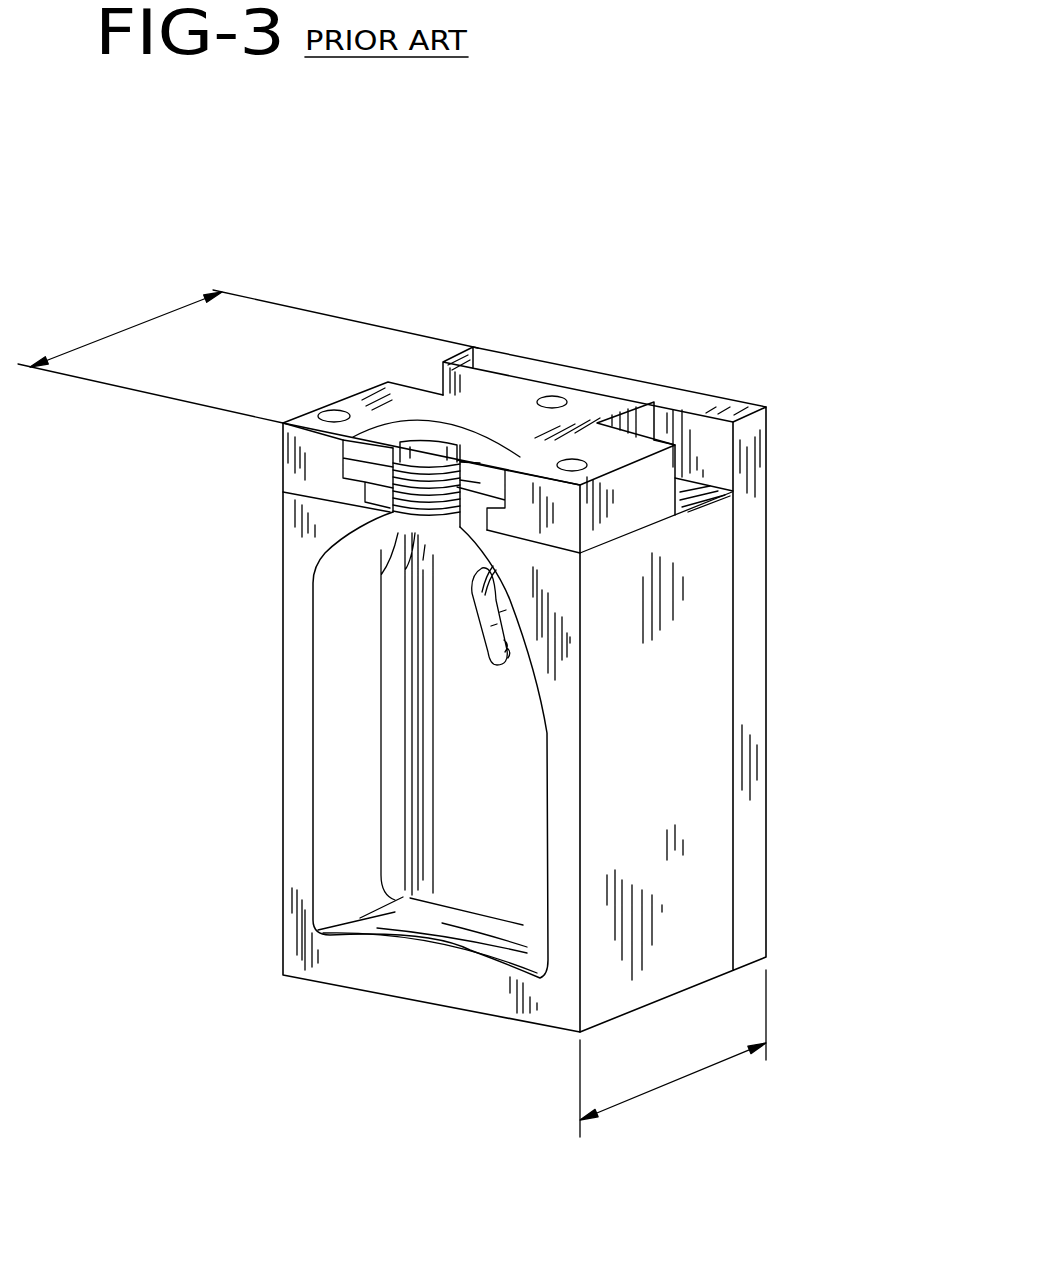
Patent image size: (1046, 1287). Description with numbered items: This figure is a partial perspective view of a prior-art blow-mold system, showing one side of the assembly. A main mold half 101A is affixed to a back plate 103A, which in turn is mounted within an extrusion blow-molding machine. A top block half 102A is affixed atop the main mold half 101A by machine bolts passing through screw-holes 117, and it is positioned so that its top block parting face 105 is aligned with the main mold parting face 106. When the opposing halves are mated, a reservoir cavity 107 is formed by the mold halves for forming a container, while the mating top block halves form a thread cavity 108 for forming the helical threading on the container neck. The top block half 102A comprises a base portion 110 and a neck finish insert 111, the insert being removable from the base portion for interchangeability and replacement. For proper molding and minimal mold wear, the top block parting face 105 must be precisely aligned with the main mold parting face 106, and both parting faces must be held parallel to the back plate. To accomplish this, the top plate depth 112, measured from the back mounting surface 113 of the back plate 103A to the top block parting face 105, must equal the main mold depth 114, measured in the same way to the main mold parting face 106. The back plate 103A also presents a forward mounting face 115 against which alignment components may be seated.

The main mold half 101A is at (283, 835).
The top block half 102A is at (358, 393).
The back plate 103A is at (768, 695).
The top block parting face 105 is at (293, 469).
The main mold parting face 106 is at (298, 566).
The reservoir cavity 107 is at (348, 752).
The thread cavity 108 is at (393, 512).
The base portion 110 is at (607, 392).
The neck finish insert 111 is at (520, 503).
The top plate depth 112 is at (133, 327).
The back mounting surface 113 is at (768, 428).
The main mold depth 114 is at (688, 1075).
The forward mounting face 115 is at (713, 452).
The screw-holes 117 is at (572, 462).